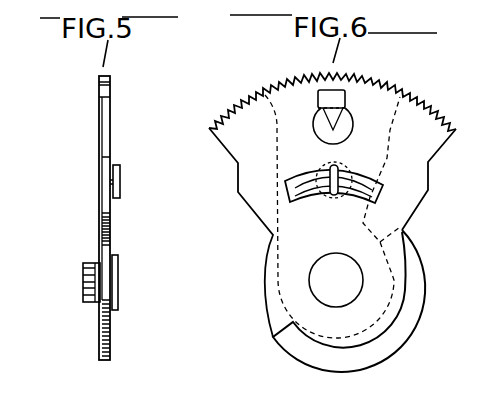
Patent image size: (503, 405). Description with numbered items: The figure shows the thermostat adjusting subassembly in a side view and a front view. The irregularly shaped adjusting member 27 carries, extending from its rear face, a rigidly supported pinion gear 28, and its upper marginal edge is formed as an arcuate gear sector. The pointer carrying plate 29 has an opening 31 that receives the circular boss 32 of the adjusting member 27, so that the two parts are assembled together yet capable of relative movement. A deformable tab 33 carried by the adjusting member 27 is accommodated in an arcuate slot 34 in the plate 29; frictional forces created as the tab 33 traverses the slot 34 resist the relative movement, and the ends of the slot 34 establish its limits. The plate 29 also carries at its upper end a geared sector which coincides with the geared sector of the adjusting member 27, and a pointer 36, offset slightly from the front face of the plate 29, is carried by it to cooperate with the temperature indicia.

In FIG. 5, the adjusting member 27 is at (114, 224).
In FIG. 6, the adjusting member 27 is at (391, 145).
In FIG. 5, the pinion gear 28 is at (92, 302).
In FIG. 6, the pointer carrying plate 29 is at (417, 208).
In FIG. 6, the opening 31 is at (336, 307).
In FIG. 5, the circular boss 32 is at (119, 305).
In FIG. 5, the deformable tab 33 is at (121, 182).
In FIG. 6, the deformable tab 33 is at (328, 170).
In FIG. 6, the arcuate slot 34 is at (303, 200).
In FIG. 6, the pointer 36 is at (343, 119).